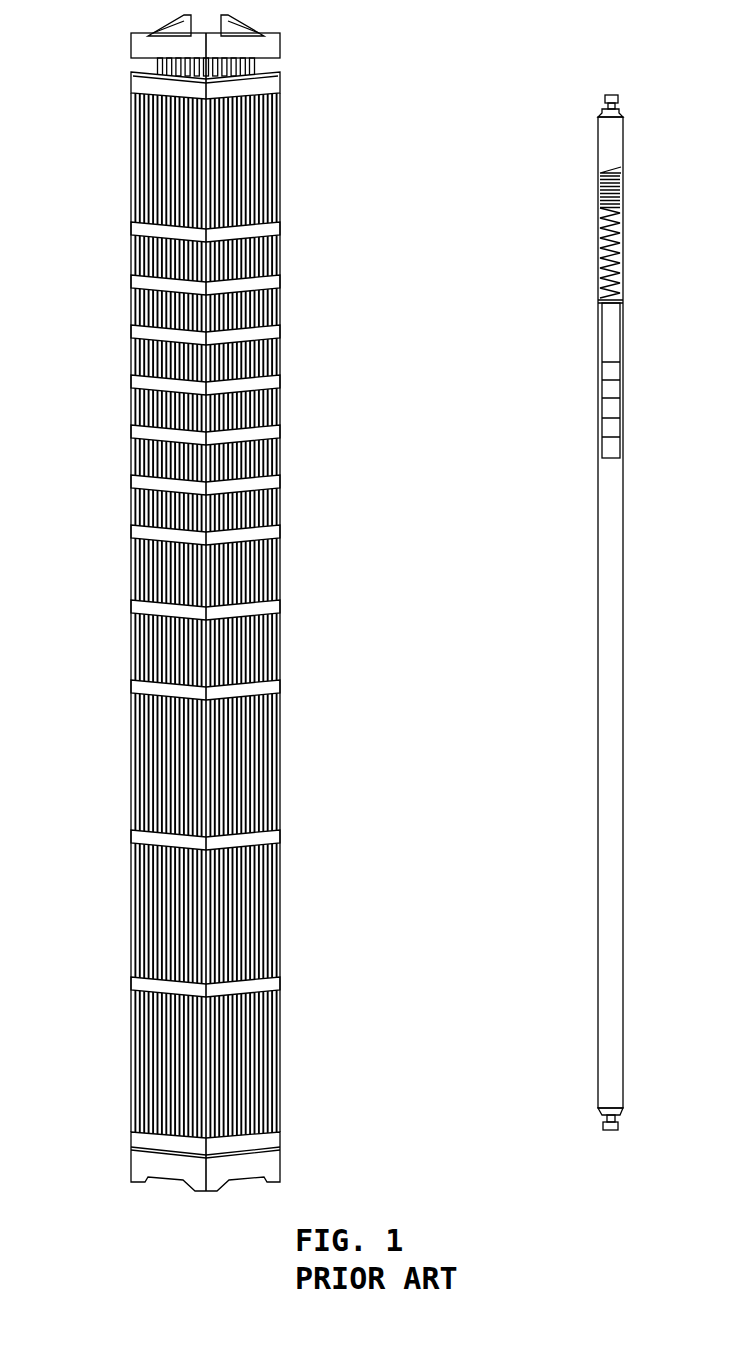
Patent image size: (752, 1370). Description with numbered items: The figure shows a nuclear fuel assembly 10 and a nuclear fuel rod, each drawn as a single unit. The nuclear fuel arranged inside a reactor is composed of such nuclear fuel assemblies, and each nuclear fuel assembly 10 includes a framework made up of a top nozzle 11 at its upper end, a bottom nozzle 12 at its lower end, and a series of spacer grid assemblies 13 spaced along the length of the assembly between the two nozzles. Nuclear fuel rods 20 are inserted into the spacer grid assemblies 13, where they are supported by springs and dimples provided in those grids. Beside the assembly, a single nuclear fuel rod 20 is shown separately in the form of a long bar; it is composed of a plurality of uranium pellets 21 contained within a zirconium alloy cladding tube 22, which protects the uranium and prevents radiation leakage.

The nuclear fuel assembly 10 is at (209, 603).
The top nozzle 11 is at (137, 45).
The bottom nozzle 12 is at (140, 1162).
The spacer grid assemblies 13 is at (140, 607).
The nuclear fuel rods 20 is at (528, 612).
The uranium pellets 21 is at (605, 407).
The zirconium alloy cladding tube 22 is at (602, 575).